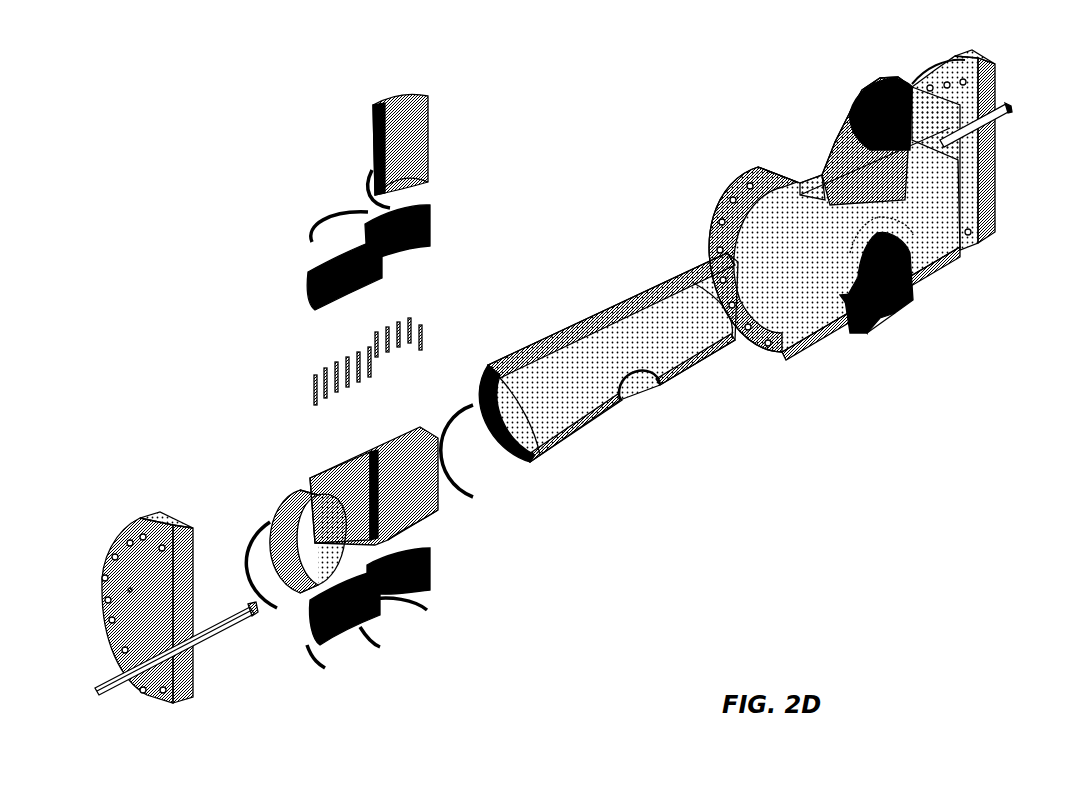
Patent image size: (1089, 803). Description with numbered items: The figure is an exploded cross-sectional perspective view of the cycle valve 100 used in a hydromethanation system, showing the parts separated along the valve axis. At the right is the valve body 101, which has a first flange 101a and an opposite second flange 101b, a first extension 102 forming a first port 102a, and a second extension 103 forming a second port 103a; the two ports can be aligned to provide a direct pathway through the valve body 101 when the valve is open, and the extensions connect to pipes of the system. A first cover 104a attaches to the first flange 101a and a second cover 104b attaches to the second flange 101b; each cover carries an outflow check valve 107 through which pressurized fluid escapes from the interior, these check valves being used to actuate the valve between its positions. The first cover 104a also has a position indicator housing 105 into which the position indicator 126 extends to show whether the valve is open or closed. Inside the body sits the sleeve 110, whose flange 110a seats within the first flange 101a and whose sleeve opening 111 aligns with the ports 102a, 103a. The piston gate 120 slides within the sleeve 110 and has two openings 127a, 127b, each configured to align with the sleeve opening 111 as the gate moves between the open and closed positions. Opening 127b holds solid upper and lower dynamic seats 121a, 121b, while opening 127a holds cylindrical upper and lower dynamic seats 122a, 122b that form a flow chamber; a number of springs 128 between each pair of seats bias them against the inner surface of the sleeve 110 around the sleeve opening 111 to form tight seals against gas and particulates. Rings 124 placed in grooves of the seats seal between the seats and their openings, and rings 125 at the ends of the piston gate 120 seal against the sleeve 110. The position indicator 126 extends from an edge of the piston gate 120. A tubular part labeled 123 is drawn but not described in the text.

The cycle valve 100 is at (178, 96).
The valve body 101 is at (812, 178).
The first flange 101a is at (758, 168).
The second flange 101b is at (948, 68).
The first extension 102 is at (838, 132).
The first port 102a is at (878, 93).
The second extension 103 is at (922, 293).
The second port 103a is at (890, 322).
The first cover 104a is at (167, 518).
The second cover 104b is at (967, 58).
The position indicator housing 105 is at (98, 685).
The outflow check valve 107 is at (957, 137).
The sleeve 110 is at (597, 312).
The flange 110a is at (517, 348).
The sleeve opening 111 is at (638, 397).
The piston gate 120 is at (300, 488).
The upper dynamic seat 121a is at (302, 273).
The lower dynamic seat 121b is at (307, 620).
The upper dynamic seat 122a is at (430, 210).
The lower dynamic seat 122b is at (430, 560).
The pipe section 123 is at (372, 148).
The ring 124 is at (360, 197).
The ring 125 is at (247, 513).
The position indicator 126 is at (233, 630).
The opening 127a is at (392, 452).
The opening 127b is at (337, 490).
The springs 128 is at (353, 337).